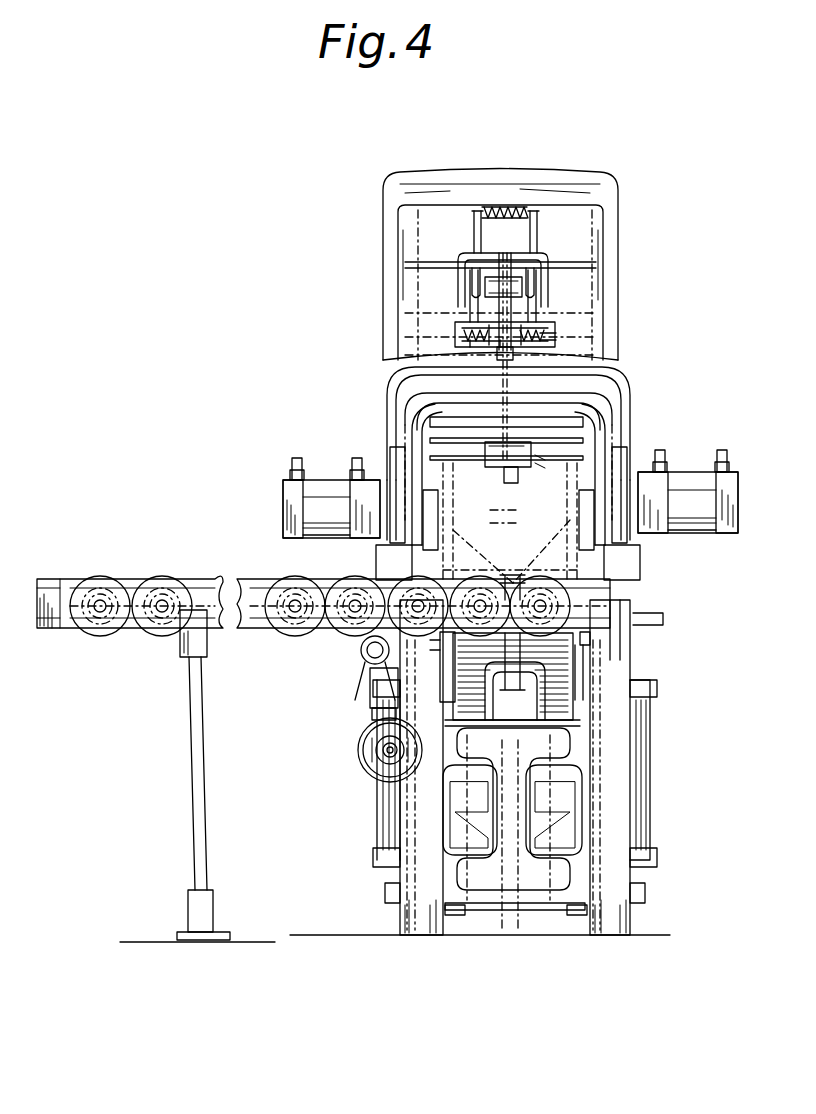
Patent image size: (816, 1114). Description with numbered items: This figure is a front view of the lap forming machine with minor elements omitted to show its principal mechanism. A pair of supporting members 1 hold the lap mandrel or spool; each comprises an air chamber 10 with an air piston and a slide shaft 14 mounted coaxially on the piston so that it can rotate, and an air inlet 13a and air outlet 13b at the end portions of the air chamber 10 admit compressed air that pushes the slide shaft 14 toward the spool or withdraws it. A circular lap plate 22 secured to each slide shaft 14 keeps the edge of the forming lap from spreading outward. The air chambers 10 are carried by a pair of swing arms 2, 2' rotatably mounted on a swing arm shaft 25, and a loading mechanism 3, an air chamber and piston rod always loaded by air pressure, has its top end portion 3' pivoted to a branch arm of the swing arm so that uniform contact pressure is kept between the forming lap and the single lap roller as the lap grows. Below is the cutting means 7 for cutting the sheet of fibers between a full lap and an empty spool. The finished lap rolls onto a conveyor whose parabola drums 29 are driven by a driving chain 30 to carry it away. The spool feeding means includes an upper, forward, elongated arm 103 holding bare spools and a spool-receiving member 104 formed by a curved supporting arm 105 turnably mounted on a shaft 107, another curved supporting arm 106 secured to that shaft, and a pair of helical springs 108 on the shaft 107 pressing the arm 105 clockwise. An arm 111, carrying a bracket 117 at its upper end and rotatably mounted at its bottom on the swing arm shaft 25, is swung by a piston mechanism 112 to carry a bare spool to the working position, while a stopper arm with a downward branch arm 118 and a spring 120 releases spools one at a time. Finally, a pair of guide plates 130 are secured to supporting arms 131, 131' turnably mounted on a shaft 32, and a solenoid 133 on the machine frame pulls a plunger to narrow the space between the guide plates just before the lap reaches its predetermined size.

The supporting member 1 is at (322, 488).
The swing arm 2 is at (402, 474).
The swing arm 2' is at (619, 474).
The loading mechanism 3 is at (487, 767).
The top end portion of loading mechanism 3' is at (502, 513).
The cutting means 7 is at (510, 790).
The air chamber 10 is at (323, 540).
The air inlet 13a is at (294, 464).
The air outlet 13b is at (355, 462).
The slide shaft 14 is at (458, 510).
The lap plate 22 is at (420, 410).
The swing arm shaft 25 is at (540, 462).
The parabola drums 29 is at (104, 636).
The driving chain 30 is at (135, 580).
The centering guide 32 is at (560, 560).
The upper forward elongated arm 103 is at (540, 176).
The spool-receiving member 104 is at (595, 305).
The curved supporting arm 105 is at (470, 322).
The curved supporting arm 106 is at (538, 300).
The shaft 107 is at (565, 326).
The helical springs 108 is at (462, 330).
The arm 111 is at (506, 408).
The piston mechanism 112 is at (487, 272).
The bracket 117 is at (566, 336).
The branch arm 118 is at (474, 225).
The spring 120 is at (495, 207).
The guide plate 130 is at (488, 470).
The supporting arm 131 is at (485, 554).
The supporting arm 131' is at (545, 551).
The solenoid 133 is at (515, 506).